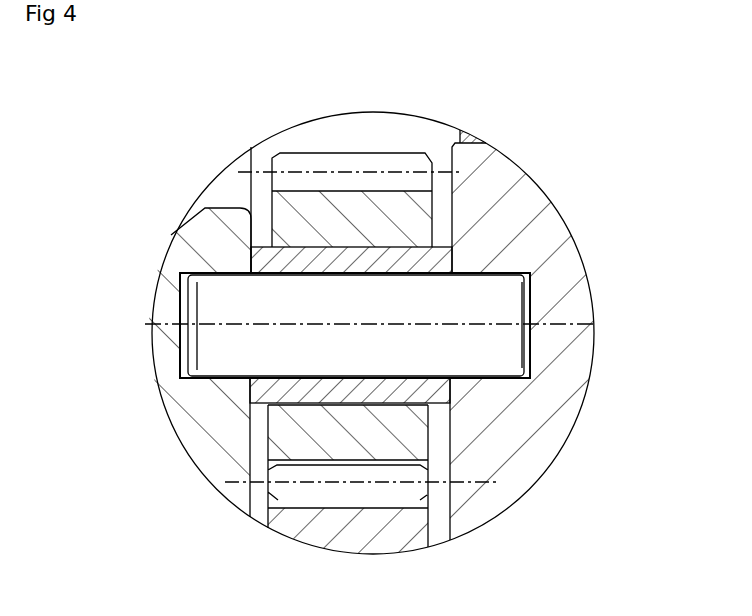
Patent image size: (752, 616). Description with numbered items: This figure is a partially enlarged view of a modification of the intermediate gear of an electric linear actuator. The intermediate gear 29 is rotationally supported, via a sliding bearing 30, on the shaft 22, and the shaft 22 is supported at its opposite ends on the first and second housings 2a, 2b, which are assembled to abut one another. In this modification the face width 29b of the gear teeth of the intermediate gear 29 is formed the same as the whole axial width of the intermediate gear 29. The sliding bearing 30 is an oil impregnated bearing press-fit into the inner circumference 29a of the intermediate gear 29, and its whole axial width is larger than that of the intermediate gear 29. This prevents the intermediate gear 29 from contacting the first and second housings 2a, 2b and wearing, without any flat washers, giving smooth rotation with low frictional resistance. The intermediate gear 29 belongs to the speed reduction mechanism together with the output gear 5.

The first housing 2a is at (203, 237).
The second housing 2b is at (523, 231).
The output gear 5 is at (412, 530).
The shaft 22 is at (200, 338).
The intermediate gear 29 is at (379, 150).
The inner circumference 29a is at (266, 265).
The face width 29b is at (335, 168).
The sliding bearing 30 is at (423, 397).